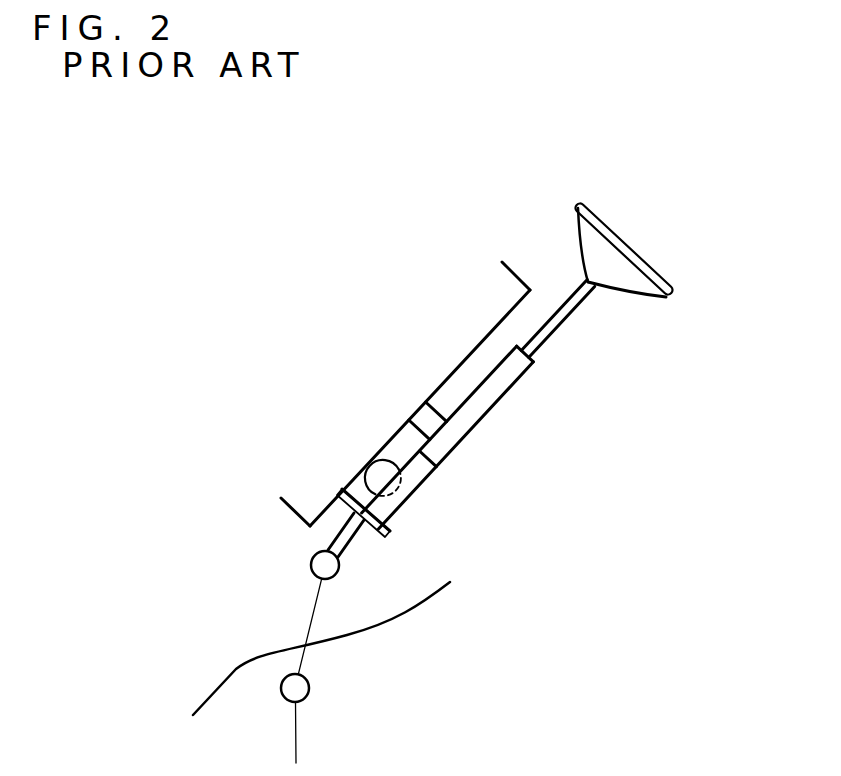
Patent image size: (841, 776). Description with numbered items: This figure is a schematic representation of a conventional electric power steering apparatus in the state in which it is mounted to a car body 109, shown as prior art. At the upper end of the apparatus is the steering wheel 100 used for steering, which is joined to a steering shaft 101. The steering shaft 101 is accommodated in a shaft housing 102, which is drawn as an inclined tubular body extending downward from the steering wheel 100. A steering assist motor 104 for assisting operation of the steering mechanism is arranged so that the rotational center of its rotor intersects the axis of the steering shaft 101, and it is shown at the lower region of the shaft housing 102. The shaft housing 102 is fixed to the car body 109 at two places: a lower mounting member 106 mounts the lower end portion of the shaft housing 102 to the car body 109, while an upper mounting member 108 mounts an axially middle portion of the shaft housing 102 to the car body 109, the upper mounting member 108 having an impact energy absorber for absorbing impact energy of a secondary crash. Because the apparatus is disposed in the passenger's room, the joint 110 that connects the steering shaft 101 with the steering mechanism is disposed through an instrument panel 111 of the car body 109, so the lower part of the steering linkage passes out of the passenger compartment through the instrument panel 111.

The steering wheel 100 is at (636, 250).
The steering shaft 101 is at (566, 326).
The shaft housing 102 is at (492, 409).
The steering assist motor 104 is at (377, 460).
The lower mounting member 106 is at (393, 519).
The upper mounting member 108 is at (428, 406).
The car body 109 is at (290, 508).
The joint 110 is at (311, 610).
The instrument panel 111 is at (217, 687).